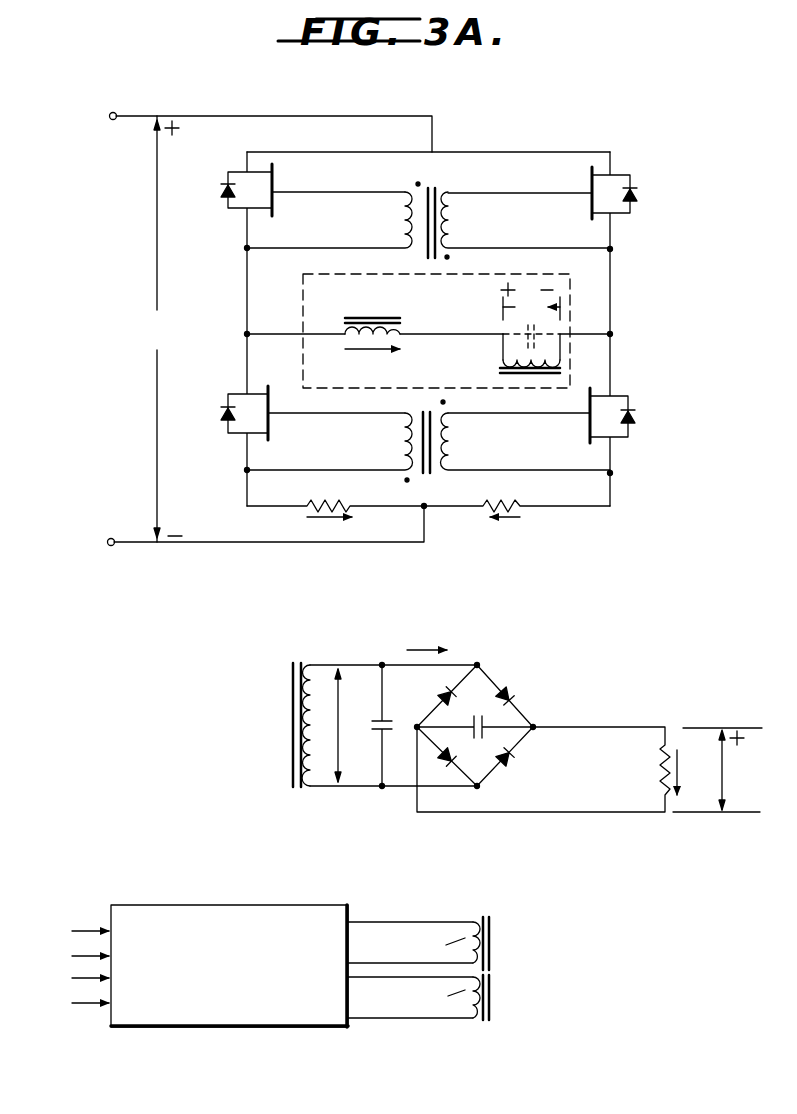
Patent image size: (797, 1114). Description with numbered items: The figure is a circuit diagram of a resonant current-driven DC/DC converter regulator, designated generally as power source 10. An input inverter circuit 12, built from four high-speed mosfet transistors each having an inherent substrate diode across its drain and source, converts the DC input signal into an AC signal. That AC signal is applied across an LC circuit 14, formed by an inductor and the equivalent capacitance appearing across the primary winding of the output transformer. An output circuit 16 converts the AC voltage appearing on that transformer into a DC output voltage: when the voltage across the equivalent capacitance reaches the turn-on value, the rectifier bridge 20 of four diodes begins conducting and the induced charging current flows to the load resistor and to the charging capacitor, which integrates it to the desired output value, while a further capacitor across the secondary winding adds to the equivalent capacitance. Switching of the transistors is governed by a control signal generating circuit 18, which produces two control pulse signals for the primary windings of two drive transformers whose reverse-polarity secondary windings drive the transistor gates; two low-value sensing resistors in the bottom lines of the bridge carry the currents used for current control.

The resonant current-driven DC/DC converter regulator 10 is at (626, 1000).
The input inverter circuit 12 is at (645, 168).
The LC circuit 14 is at (303, 305).
The output circuit 16 is at (598, 672).
The control signal generating circuit 18 is at (246, 884).
The rectifier bridge 20 is at (505, 662).